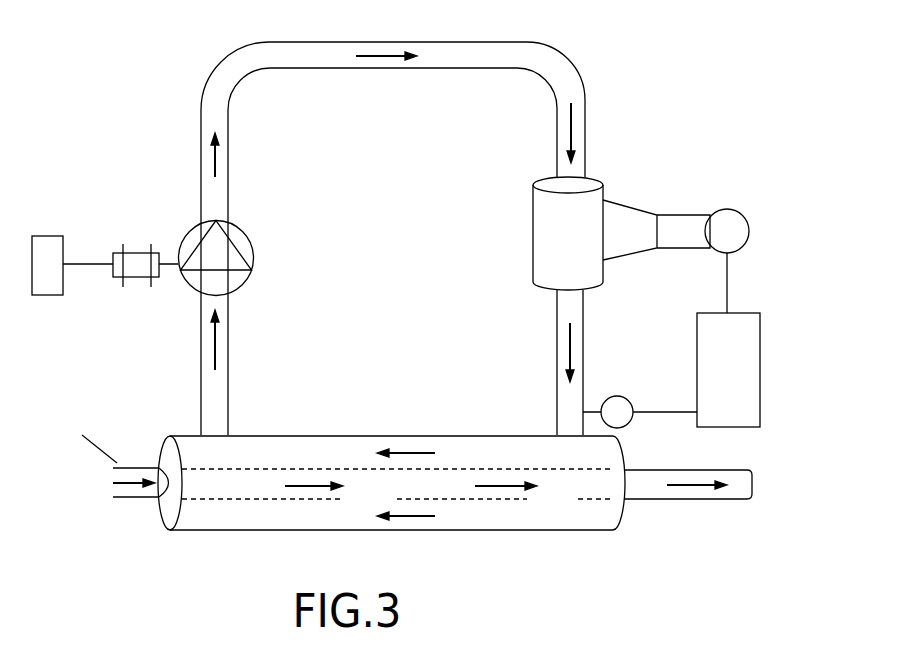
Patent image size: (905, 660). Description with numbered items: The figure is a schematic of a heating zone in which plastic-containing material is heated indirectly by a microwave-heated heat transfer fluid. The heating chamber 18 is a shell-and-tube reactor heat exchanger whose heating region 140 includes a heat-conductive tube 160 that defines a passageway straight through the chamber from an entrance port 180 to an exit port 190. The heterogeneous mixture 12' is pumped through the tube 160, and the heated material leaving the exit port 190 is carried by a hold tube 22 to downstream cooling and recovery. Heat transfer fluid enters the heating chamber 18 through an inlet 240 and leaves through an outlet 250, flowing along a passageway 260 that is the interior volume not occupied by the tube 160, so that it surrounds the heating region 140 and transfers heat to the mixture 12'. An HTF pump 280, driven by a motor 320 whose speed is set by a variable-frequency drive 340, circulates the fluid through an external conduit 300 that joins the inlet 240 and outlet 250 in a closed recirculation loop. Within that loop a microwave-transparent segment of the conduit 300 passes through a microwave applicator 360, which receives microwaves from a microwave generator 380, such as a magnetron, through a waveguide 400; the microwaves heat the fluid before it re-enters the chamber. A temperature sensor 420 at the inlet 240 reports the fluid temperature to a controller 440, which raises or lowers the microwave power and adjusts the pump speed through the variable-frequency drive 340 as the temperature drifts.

The heterogeneous mixture 12' is at (87, 437).
The heating chamber 18 is at (587, 532).
The hold tube 22 is at (738, 495).
The heating region 140 is at (223, 490).
The tube 160 is at (458, 492).
The entrance port 180 is at (165, 503).
The exit port 190 is at (625, 502).
The inlet 240 is at (553, 433).
The outlet 250 is at (228, 433).
The passageway 260 is at (342, 512).
The HTF pump 280 is at (253, 250).
The conduit 300 is at (512, 67).
The motor 320 is at (133, 253).
The variable-frequency drive 340 is at (46, 236).
The microwave applicator 360 is at (537, 222).
The microwave generator 380 is at (747, 226).
The waveguide 400 is at (633, 212).
The temperature sensor 420 is at (615, 398).
The controller 440 is at (763, 366).